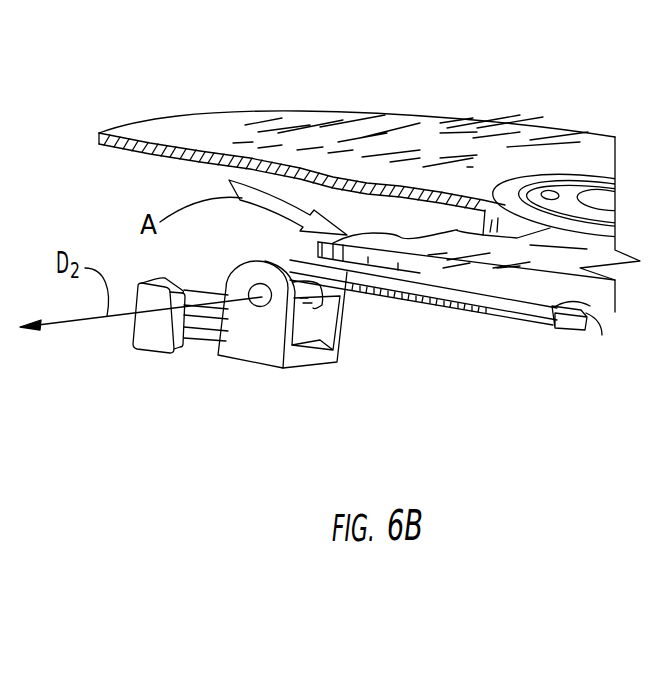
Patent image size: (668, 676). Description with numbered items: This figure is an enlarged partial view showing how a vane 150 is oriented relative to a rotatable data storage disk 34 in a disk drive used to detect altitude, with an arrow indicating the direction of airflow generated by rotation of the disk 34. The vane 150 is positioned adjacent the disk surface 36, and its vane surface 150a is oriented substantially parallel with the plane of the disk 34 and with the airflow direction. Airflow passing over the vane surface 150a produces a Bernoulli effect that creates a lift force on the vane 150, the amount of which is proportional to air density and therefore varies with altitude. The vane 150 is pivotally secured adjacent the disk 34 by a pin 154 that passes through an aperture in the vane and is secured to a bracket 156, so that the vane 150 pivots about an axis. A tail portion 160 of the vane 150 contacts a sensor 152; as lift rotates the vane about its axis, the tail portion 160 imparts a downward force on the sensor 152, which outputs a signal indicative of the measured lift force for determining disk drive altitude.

The data storage disk 34 is at (323, 110).
The disk surface 36 is at (222, 127).
The vane 150 is at (473, 317).
The vane surface 150a is at (585, 305).
The sensor 152 is at (192, 338).
The pin 154 is at (258, 298).
The bracket 156 is at (252, 352).
The tail portion 160 is at (206, 292).